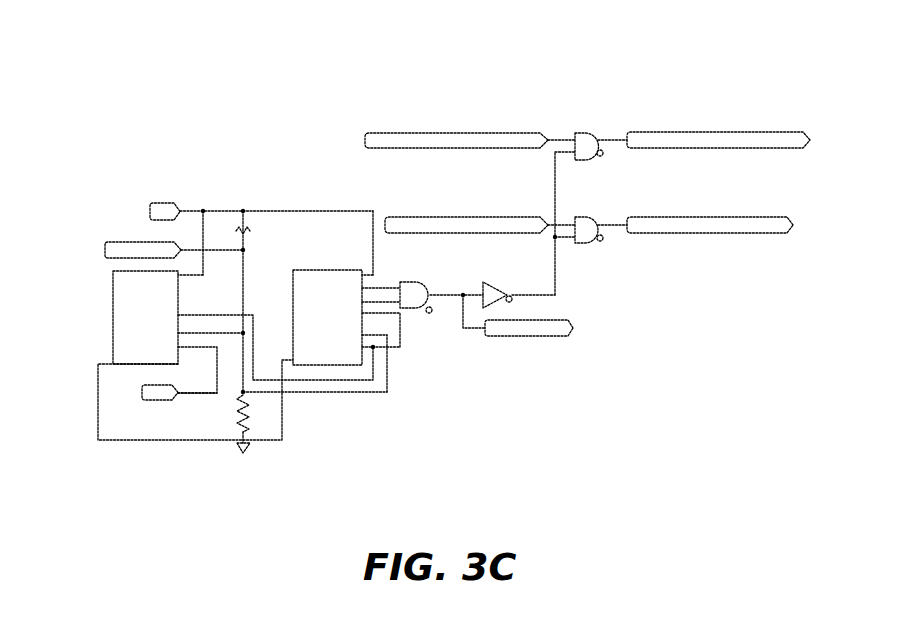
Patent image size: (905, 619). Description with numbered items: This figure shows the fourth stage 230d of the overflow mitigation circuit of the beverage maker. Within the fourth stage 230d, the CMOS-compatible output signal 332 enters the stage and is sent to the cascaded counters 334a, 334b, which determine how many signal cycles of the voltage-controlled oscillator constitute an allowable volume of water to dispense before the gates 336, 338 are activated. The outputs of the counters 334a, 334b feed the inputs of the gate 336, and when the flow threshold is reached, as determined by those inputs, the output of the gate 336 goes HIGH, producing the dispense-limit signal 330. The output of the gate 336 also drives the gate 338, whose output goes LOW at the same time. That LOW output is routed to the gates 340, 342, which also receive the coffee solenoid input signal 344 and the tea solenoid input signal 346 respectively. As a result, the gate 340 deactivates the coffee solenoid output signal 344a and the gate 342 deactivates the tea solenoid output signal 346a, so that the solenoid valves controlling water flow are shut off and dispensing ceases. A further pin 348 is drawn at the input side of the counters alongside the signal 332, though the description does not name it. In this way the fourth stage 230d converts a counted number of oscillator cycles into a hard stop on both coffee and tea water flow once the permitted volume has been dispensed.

The fourth stage 230d is at (427, 256).
The dispense-limit signal 330 is at (532, 355).
The CMOS-compatible output signal 332 is at (158, 444).
The cascaded counter 334a is at (111, 312).
The cascaded counter 334b is at (307, 259).
The gate 336 is at (410, 365).
The gate 338 is at (477, 342).
The gate 340 is at (575, 108).
The gate 342 is at (601, 261).
The coffee solenoid input signal 344 is at (456, 107).
The coffee solenoid output signal 344a is at (718, 107).
The tea solenoid input signal 346 is at (466, 200).
The tea solenoid output signal 346a is at (710, 257).
The input pin 348 is at (154, 213).